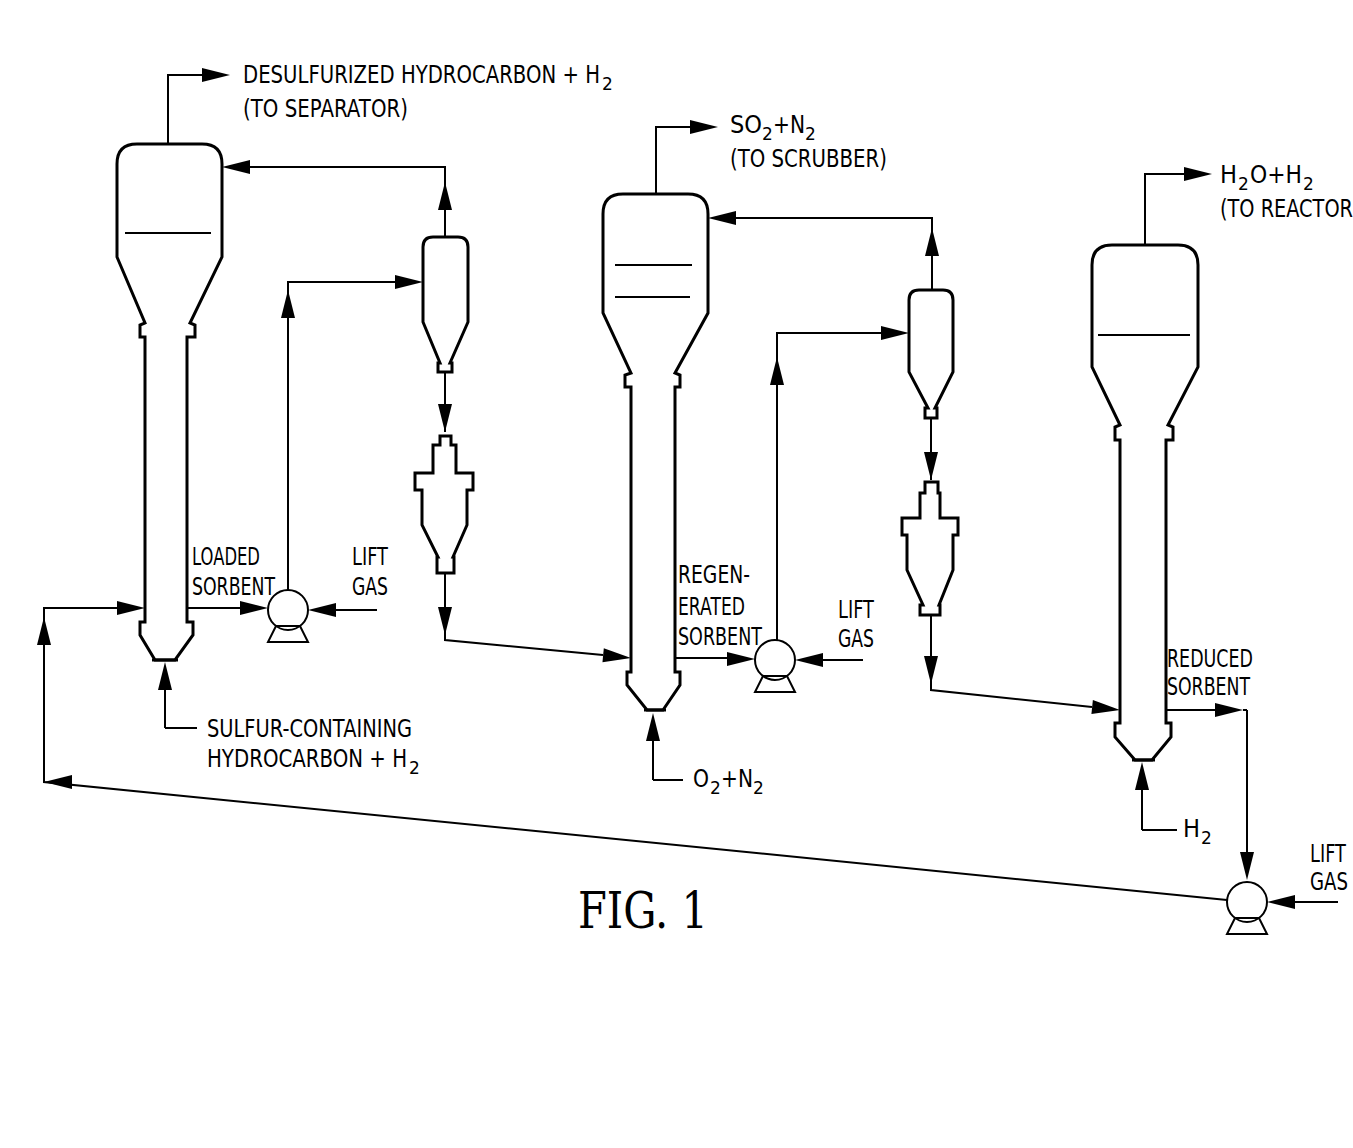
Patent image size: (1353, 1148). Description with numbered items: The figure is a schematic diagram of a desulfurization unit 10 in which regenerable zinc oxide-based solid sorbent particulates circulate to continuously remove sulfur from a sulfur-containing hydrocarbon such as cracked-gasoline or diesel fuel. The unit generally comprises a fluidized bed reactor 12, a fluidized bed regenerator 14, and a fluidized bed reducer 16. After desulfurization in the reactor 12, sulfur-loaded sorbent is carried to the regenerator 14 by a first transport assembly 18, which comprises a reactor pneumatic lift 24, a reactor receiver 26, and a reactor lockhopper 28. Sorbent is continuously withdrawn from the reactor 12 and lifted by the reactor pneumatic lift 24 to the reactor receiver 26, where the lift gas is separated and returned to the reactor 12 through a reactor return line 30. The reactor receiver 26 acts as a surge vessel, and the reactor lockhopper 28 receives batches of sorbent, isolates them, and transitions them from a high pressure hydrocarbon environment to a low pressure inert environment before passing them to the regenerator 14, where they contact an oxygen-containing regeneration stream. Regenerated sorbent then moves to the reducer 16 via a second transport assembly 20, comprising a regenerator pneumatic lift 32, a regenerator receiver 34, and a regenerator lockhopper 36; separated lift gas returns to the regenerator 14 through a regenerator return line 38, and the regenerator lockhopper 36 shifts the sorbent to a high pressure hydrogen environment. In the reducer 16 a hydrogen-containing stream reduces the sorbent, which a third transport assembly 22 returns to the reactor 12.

The desulfurization unit 10 is at (1006, 145).
The fluidized bed reactor 12 is at (117, 195).
The fluidized bed regenerator 14 is at (603, 247).
The fluidized bed reducer 16 is at (1092, 295).
The first transport assembly 18 is at (481, 277).
The second transport assembly 20 is at (967, 324).
The third transport assembly 22 is at (853, 872).
The reactor pneumatic lift 24 is at (304, 627).
The reactor receiver 26 is at (468, 297).
The reactor lockhopper 28 is at (467, 515).
The reactor return line 30 is at (428, 167).
The regenerator pneumatic lift 32 is at (791, 676).
The regenerator receiver 34 is at (953, 343).
The regenerator lockhopper 36 is at (953, 555).
The regenerator return line 38 is at (914, 218).